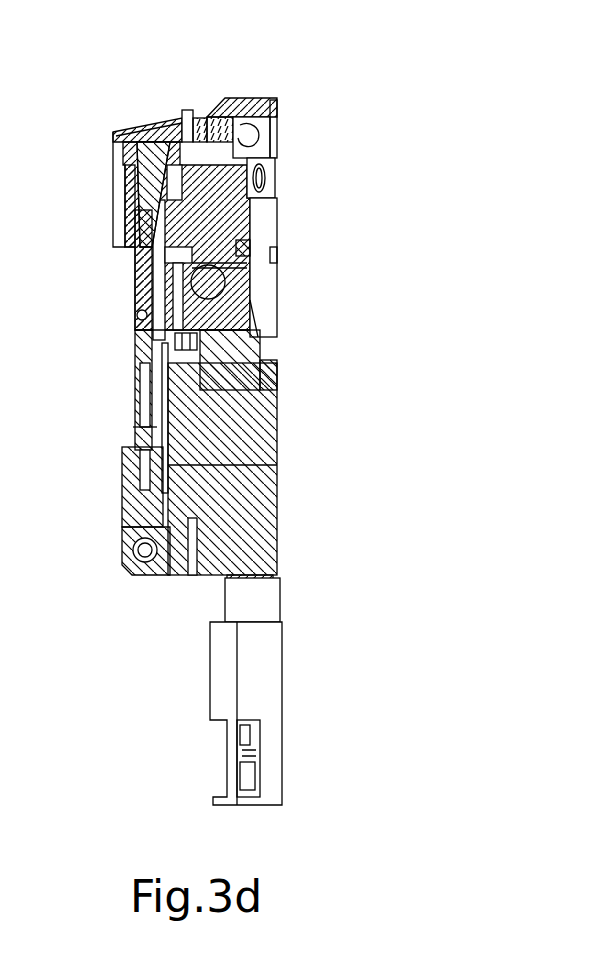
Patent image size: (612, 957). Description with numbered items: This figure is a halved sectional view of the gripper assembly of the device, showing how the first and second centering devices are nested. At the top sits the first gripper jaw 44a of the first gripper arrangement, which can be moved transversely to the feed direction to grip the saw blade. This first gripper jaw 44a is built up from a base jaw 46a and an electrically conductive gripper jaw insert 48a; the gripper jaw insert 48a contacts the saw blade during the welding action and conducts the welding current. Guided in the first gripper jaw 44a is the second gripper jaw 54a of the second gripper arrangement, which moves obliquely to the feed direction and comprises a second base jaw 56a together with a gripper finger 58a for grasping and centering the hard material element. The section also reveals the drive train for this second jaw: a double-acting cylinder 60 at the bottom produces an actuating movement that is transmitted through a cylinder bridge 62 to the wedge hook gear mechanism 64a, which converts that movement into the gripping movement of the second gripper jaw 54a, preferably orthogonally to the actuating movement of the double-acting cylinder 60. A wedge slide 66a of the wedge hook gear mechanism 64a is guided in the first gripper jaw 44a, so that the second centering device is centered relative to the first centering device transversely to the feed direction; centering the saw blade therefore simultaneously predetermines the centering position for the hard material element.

The first gripper jaw 44a is at (217, 190).
The base jaw 46a is at (130, 227).
The gripper jaw insert 48a is at (280, 140).
The second gripper jaw 54a is at (206, 125).
The second base jaw 56a is at (133, 150).
The gripper finger 58a is at (263, 98).
The wedge hook gear mechanism 64a is at (154, 128).
The wedge slide 66a is at (145, 228).
The cylinder bridge 62 is at (158, 585).
The double-acting cylinder 60 is at (200, 752).